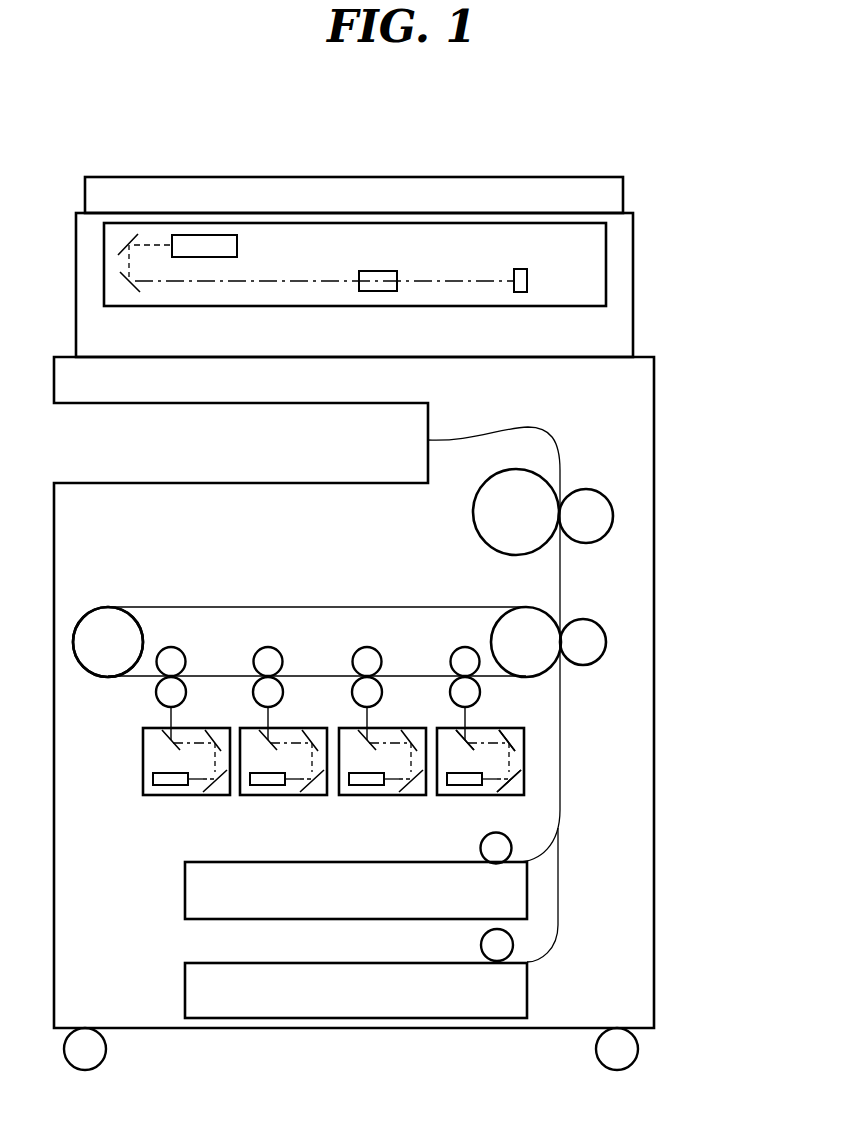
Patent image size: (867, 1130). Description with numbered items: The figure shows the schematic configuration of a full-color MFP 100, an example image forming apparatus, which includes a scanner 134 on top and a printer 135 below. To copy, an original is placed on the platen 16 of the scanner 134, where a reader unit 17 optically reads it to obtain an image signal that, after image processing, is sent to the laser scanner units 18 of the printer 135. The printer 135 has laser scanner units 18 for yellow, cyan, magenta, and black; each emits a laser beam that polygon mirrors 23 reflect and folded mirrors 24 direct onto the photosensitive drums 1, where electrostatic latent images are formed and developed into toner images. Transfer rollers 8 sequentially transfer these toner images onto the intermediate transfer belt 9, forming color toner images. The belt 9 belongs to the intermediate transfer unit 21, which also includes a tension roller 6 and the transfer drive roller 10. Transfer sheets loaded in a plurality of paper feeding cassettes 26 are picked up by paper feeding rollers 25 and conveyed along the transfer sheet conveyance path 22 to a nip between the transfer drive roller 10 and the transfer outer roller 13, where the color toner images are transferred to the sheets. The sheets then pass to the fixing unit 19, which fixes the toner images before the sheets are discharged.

The MFP 100 is at (588, 156).
The platen 16 is at (185, 178).
The scanner 134 is at (633, 282).
The reader unit 17 is at (120, 307).
The printer 135 is at (655, 408).
The fixing unit 19 is at (587, 488).
The transfer sheet conveyance path 22 is at (560, 702).
The intermediate transfer belt 9 is at (316, 607).
The tension roller 6 is at (108, 616).
The intermediate transfer unit 21 is at (132, 678).
The transfer drive roller 10 is at (525, 618).
The transfer outer roller 13 is at (585, 619).
The transfer rollers 8 is at (185, 662).
The photosensitive drums 1 is at (187, 690).
The laser scanner units 18 is at (208, 795).
The folded mirrors 24 is at (515, 737).
The polygon mirrors 23 is at (468, 785).
The paper feeding rollers 25 is at (480, 843).
The paper feeding cassettes 26 is at (197, 982).